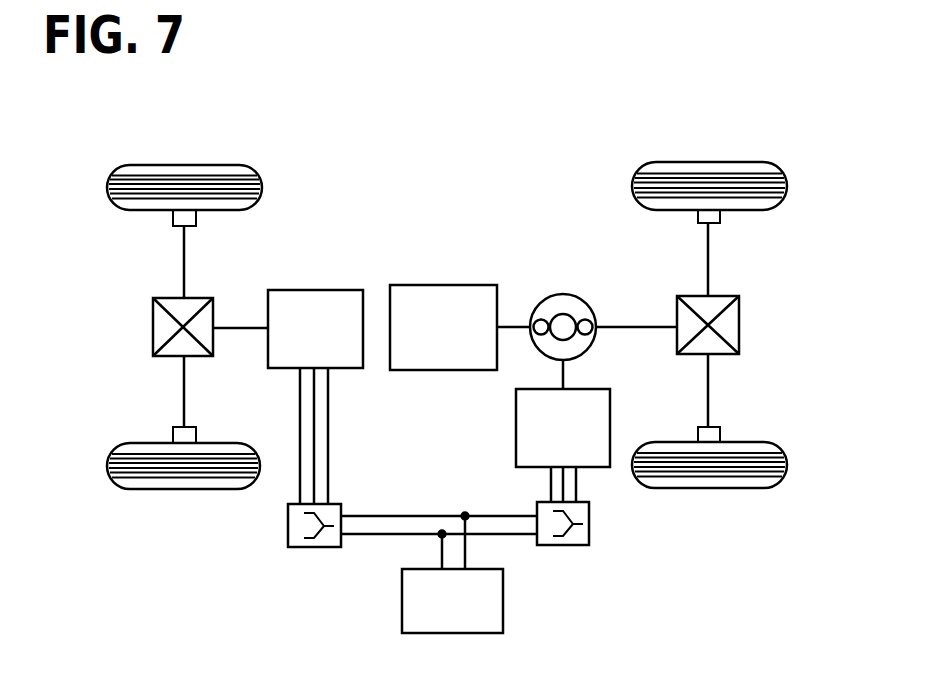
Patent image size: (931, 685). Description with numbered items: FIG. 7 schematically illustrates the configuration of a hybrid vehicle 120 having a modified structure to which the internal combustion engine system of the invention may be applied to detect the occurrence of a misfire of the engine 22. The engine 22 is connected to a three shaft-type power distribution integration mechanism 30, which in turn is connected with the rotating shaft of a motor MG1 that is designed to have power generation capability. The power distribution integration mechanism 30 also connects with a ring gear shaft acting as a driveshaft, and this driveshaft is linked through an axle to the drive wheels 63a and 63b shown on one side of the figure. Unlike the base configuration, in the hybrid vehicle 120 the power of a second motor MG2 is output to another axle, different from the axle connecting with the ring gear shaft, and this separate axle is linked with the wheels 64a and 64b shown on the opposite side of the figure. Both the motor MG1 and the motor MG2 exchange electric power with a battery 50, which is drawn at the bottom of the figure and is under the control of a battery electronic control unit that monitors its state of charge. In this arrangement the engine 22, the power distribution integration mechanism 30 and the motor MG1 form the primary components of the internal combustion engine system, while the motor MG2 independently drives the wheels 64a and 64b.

The hybrid vehicle 120 is at (474, 141).
The wheel 64a is at (184, 165).
The wheel 64b is at (184, 489).
The drive wheel 63a is at (710, 162).
The drive wheel 63b is at (708, 488).
The motor MG2 is at (313, 290).
The motor MG1 is at (517, 428).
The engine 22 is at (445, 285).
The power distribution integration mechanism 30 is at (565, 294).
The battery 50 is at (503, 600).